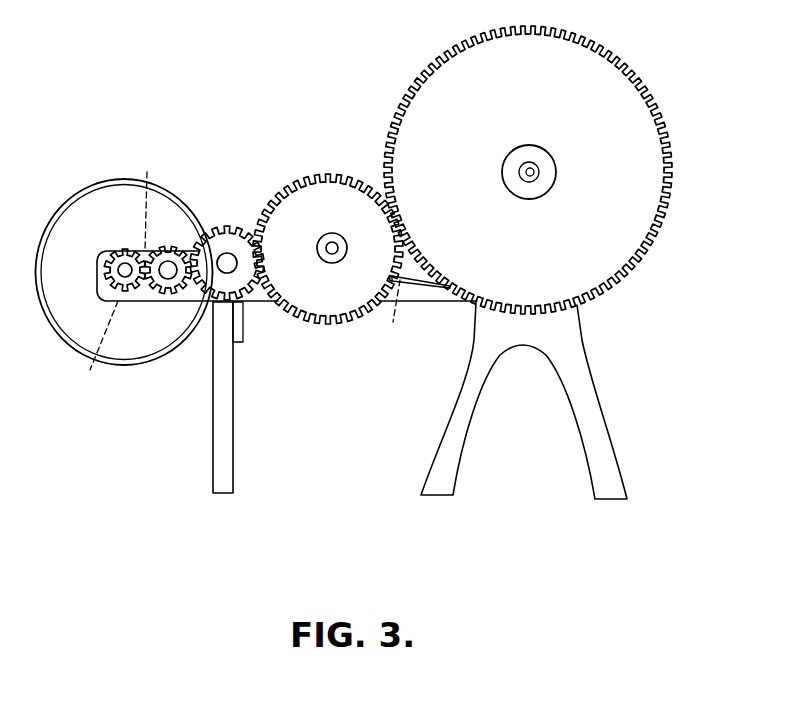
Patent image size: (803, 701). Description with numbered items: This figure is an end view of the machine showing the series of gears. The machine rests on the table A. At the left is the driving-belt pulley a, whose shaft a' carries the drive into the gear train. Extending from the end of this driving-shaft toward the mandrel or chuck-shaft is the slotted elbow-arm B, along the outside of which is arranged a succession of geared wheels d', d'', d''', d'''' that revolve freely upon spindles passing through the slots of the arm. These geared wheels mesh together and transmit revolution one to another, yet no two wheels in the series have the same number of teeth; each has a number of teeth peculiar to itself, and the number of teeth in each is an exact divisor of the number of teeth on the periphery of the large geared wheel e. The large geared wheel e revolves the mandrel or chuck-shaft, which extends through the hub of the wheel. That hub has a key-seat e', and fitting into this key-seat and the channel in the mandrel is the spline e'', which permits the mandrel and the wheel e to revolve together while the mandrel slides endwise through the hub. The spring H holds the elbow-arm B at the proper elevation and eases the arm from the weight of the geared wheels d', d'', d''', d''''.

The driving-belt pulley a is at (124, 272).
The shaft a' is at (101, 345).
The elbow-arm B is at (146, 199).
The geared wheel d' is at (121, 267).
The geared wheel d'' is at (165, 267).
The geared wheel d''' is at (224, 258).
The geared wheel d'''' is at (309, 240).
The large geared wheel e is at (490, 180).
The key-seat e' is at (539, 166).
The spline e'' is at (551, 179).
The table A is at (420, 296).
The spring H is at (388, 315).